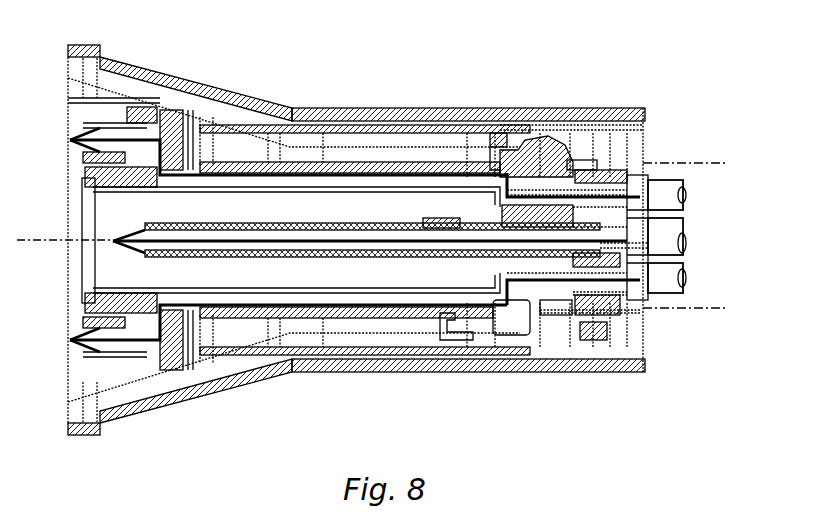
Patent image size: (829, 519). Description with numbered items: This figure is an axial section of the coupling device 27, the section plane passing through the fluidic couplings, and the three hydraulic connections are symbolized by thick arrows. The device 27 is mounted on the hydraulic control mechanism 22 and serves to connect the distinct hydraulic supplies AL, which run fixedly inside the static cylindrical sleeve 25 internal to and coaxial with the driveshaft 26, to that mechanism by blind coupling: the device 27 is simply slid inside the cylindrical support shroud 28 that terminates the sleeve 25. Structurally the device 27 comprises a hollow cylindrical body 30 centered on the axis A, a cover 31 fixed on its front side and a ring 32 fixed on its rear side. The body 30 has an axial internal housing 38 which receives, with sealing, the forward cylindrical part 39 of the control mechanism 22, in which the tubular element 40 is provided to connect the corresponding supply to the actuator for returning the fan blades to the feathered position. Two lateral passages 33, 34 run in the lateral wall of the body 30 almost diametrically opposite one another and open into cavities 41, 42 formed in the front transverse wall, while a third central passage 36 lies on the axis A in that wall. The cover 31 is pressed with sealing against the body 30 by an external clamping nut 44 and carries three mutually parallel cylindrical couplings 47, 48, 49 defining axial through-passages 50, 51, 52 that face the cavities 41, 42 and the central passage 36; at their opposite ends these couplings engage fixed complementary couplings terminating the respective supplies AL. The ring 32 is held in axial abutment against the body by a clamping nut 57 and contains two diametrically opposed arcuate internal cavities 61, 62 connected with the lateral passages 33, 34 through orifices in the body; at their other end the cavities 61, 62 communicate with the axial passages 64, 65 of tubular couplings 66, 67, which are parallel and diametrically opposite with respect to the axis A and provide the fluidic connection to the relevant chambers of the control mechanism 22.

The hydraulic control mechanism 22 is at (78, 210).
The static cylindrical sleeve 25 is at (706, 158).
The driveshaft 26 is at (460, 375).
The device 27 is at (218, 143).
The cylindrical support shroud 28 is at (260, 358).
The cylindrical body 30 is at (345, 148).
The cover 31 is at (582, 168).
The ring 32 is at (110, 100).
The lateral passage 33 is at (402, 165).
The lateral passage 34 is at (387, 315).
The central passage 36 is at (492, 218).
The axial internal housing 38 is at (270, 210).
The forward cylindrical part 39 is at (327, 275).
The tubular element 40 is at (150, 248).
The cavity 41 is at (497, 220).
The cavity 42 is at (530, 330).
The clamping nut 44 is at (495, 133).
The coupling 47 is at (595, 172).
The coupling 48 is at (605, 292).
The coupling 49 is at (595, 275).
The axial through-passage 50 is at (622, 192).
The axial through-passage 51 is at (645, 238).
The axial through-passage 52 is at (628, 298).
The clamping nut 57 is at (90, 175).
The internal cavity 61 is at (158, 105).
The internal cavity 62 is at (163, 365).
The axial passage 64 is at (105, 130).
The axial passage 65 is at (120, 392).
The tubular coupling 66 is at (102, 108).
The tubular coupling 67 is at (97, 365).
The axis A is at (30, 242).
The hydraulic supplies AL is at (690, 283).